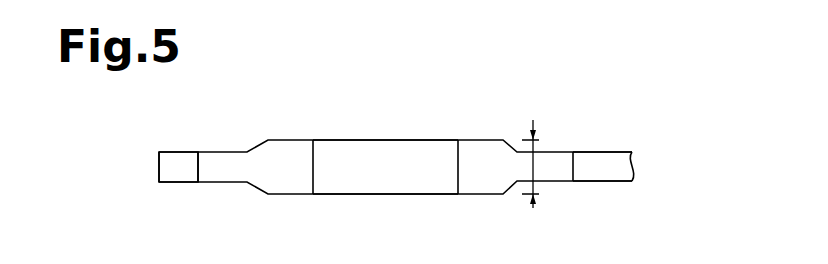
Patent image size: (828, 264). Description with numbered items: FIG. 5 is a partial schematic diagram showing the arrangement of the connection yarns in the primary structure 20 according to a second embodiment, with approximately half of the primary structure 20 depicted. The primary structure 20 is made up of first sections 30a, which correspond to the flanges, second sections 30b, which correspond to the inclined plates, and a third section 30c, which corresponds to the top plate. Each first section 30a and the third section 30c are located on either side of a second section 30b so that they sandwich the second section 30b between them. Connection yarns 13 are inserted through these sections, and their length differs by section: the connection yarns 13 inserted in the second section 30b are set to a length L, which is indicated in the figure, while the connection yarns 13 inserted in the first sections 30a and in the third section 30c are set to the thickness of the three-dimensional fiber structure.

The primary structure 20 is at (288, 132).
The first section 30a is at (180, 152).
The second section 30b is at (390, 140).
The third section 30c is at (593, 152).
The connection yarn 13 is at (198, 167).
The length of connection yarns in second section L is at (533, 167).